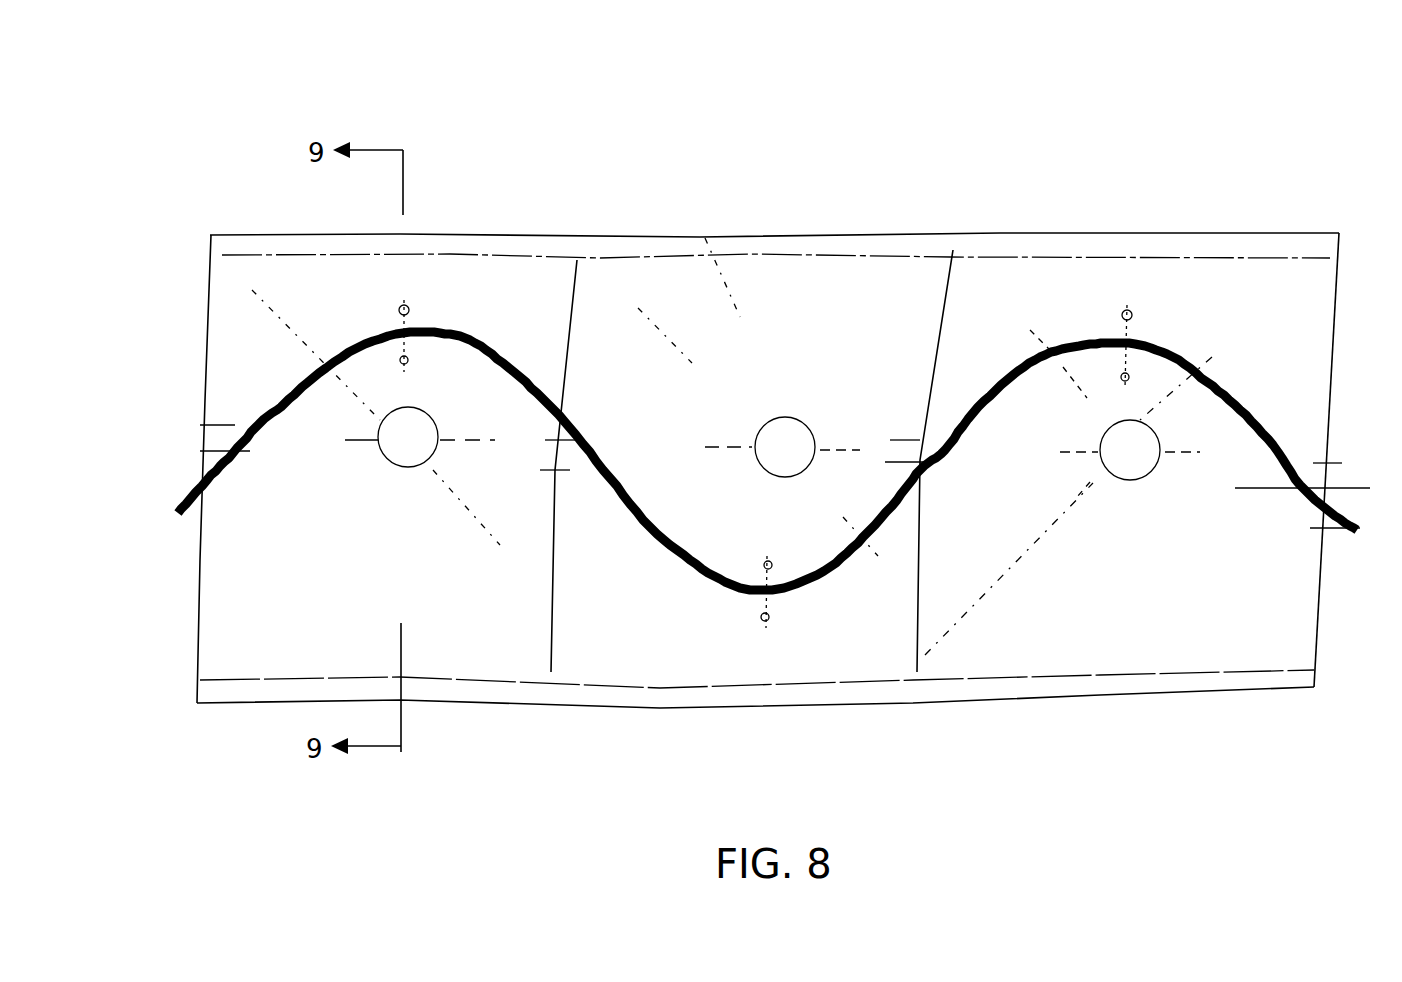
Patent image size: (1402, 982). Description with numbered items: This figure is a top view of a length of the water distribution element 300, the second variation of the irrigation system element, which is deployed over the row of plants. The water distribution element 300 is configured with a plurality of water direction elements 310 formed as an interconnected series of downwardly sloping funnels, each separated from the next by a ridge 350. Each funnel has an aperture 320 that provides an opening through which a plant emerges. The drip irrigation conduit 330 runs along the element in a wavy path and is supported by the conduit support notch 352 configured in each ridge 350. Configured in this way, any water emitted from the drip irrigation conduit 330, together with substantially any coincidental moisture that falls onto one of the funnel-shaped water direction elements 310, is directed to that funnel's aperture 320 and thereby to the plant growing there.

The water distribution element 300 is at (290, 97).
The water direction elements 310 is at (467, 285).
The aperture 320 is at (410, 450).
The drip irrigation conduit 330 is at (263, 418).
The ridge 350 is at (550, 530).
The conduit support notch 352 is at (560, 465).